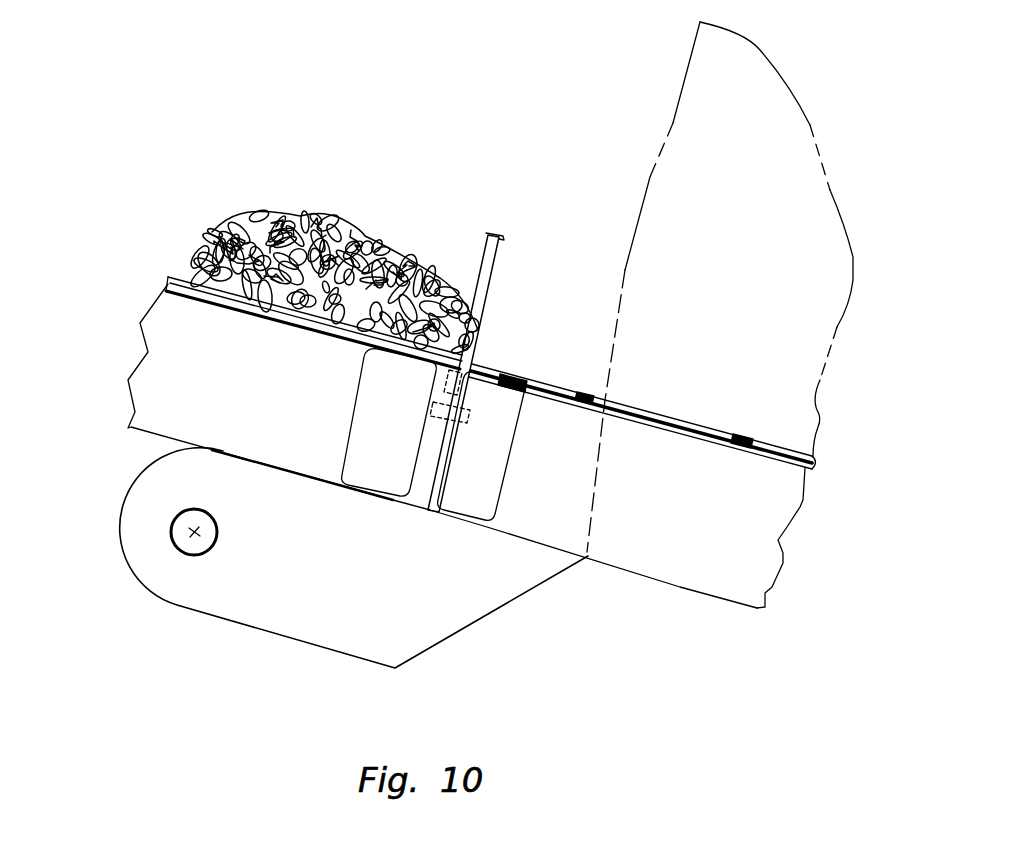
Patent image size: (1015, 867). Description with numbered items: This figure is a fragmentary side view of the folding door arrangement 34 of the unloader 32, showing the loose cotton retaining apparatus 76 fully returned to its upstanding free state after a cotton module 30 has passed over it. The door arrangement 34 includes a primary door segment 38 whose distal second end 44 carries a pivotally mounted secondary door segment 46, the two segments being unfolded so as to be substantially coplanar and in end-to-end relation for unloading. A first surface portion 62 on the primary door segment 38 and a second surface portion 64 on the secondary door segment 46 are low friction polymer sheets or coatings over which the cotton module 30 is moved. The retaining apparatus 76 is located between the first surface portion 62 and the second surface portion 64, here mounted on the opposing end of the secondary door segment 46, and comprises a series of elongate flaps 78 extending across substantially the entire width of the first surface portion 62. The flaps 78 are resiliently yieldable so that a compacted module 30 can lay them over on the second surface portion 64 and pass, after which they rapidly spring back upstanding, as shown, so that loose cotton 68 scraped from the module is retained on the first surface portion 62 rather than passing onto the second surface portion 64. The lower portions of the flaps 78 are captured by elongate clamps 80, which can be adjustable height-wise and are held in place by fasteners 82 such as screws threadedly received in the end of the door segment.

The cotton module 30 is at (690, 60).
The unloader 32 is at (882, 355).
The folding door arrangement 34 is at (779, 542).
The primary door segment 38 is at (132, 412).
The second end 44 is at (413, 468).
The secondary door segment 46 is at (688, 590).
The first surface portion 62 is at (178, 272).
The second surface portion 64 is at (795, 443).
The loose cotton 68 is at (393, 260).
The loose cotton retaining apparatus 76 is at (503, 275).
The elongate flaps 78 is at (502, 238).
The elongate clamps 80 is at (432, 437).
The fasteners 82 is at (430, 406).